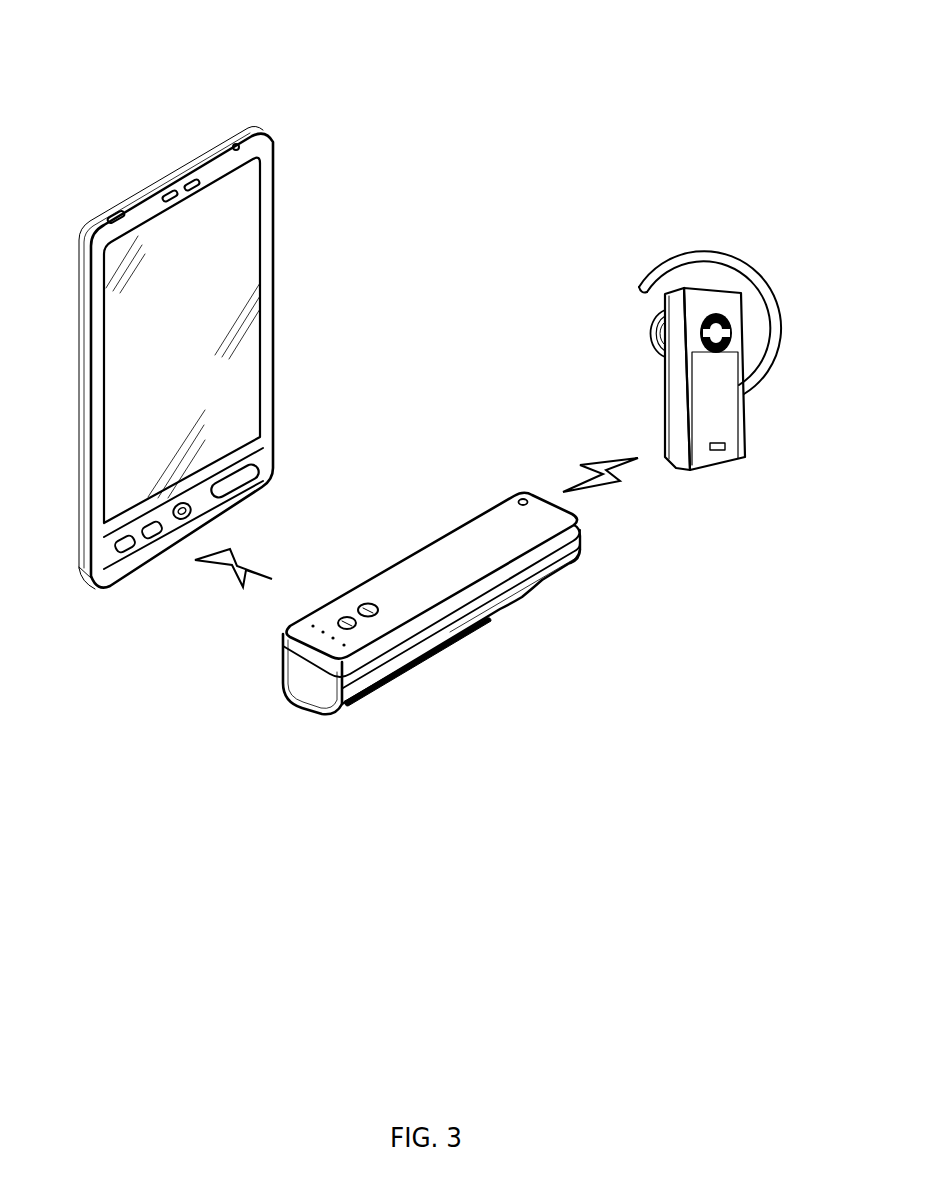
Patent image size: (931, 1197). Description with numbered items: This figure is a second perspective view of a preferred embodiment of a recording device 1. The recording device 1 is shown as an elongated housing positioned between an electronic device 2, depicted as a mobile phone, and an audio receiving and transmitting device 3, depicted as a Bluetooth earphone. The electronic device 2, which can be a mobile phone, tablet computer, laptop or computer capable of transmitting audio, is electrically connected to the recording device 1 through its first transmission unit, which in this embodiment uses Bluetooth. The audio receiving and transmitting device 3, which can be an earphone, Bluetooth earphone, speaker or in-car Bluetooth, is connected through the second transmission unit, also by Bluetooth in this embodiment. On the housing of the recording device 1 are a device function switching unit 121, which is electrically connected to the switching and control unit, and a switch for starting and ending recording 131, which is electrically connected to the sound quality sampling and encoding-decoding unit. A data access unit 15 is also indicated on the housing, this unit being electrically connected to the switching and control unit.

The recording device 1 is at (436, 620).
The electronic device 2 is at (183, 187).
The audio receiving and transmitting device 3 is at (723, 301).
The data access unit 15 is at (368, 692).
The device function switching unit 121 is at (379, 612).
The switch for starting and ending recording 131 is at (407, 670).